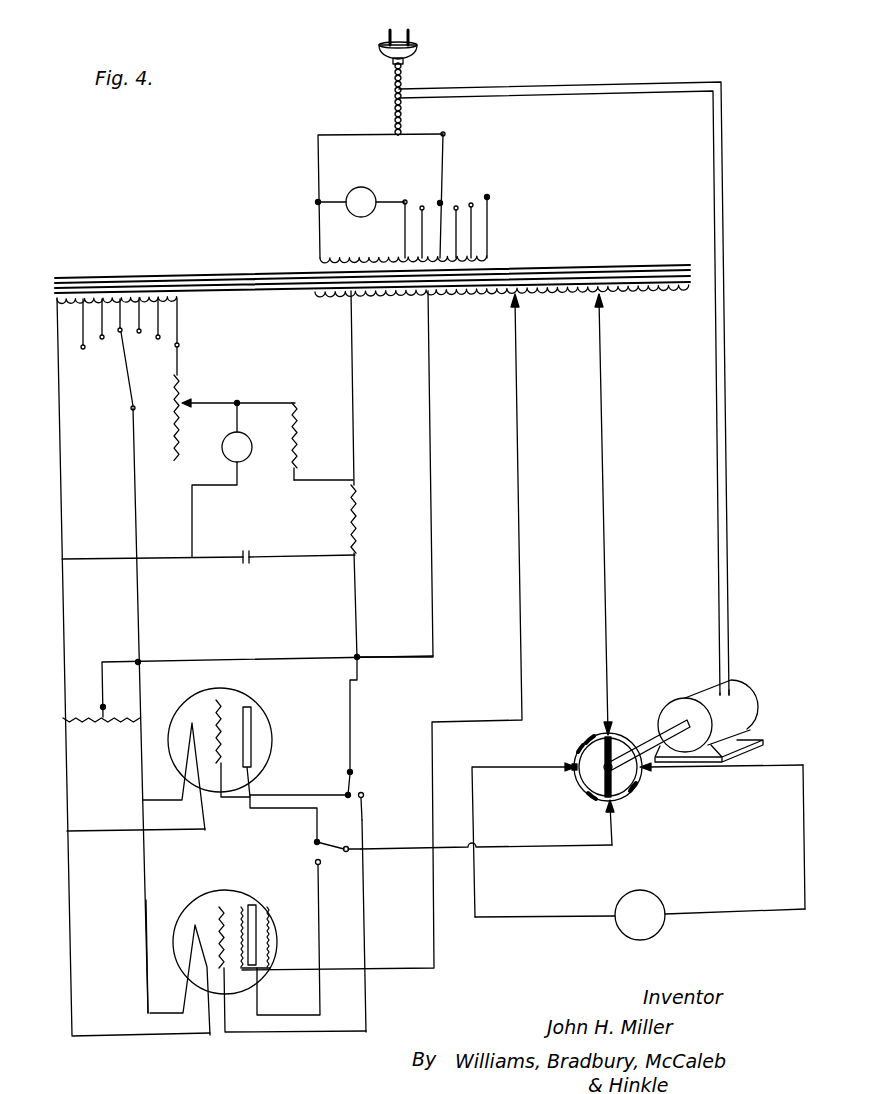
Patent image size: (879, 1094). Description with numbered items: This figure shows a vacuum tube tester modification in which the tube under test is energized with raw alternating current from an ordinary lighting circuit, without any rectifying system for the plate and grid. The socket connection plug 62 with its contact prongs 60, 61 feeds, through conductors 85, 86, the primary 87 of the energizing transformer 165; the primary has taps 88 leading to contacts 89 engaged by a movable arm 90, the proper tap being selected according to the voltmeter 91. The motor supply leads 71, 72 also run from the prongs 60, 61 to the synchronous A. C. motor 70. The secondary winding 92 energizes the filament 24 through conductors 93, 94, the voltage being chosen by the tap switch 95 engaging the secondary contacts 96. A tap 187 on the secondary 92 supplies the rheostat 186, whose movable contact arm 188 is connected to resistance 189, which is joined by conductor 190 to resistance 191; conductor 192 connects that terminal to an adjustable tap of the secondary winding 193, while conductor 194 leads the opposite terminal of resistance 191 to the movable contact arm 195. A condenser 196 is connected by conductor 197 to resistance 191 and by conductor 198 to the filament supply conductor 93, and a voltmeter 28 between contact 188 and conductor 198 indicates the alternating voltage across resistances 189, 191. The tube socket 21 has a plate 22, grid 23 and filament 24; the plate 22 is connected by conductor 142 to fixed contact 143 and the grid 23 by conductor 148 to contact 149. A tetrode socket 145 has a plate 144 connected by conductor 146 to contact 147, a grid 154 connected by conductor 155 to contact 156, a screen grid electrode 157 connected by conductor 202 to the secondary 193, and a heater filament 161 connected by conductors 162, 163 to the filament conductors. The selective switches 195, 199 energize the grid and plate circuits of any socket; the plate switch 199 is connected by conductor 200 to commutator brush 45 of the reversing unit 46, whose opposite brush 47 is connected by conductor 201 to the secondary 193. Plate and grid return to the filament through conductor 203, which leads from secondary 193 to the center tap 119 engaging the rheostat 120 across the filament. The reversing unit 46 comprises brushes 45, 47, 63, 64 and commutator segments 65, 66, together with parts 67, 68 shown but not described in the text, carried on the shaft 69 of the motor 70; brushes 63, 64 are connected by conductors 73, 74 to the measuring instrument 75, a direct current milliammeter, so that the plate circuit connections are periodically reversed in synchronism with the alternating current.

The contact prong 60 is at (388, 36).
The contact prong 61 is at (411, 36).
The socket connection plug 62 is at (405, 61).
The motor supply lead 71 is at (488, 95).
The motor supply lead 72 is at (485, 88).
The conductor 85 is at (340, 134).
The conductor 86 is at (440, 132).
The primary 87 is at (371, 256).
The taps 88 is at (488, 224).
The contacts 89 is at (490, 196).
The movable arm 90 is at (445, 168).
The voltmeter 91 is at (363, 186).
The secondary winding 92 is at (104, 297).
The conductor 93 is at (60, 560).
The conductor 94 is at (140, 627).
The tap switch 95 is at (127, 380).
The secondary contacts 96 is at (84, 350).
The energizing transformer 165 is at (252, 277).
The secondary winding 193 is at (464, 296).
The rheostat 186 is at (184, 392).
The tap 187 is at (181, 358).
The movable contact arm 188 is at (214, 403).
The resistance 189 is at (298, 438).
The conductor 190 is at (323, 480).
The resistance 191 is at (358, 512).
The conductor 192 is at (356, 396).
The conductor 194 is at (359, 620).
The voltmeter 28 is at (246, 459).
The condenser 196 is at (245, 548).
The conductor 197 is at (312, 560).
The conductor 198 is at (166, 560).
The center tap 119 is at (103, 664).
The center tap resistor 120 is at (103, 728).
The vacuum tube socket 21 is at (193, 706).
The plate 22 is at (253, 728).
The grid 23 is at (232, 698).
The filament 24 is at (185, 743).
The conductor 142 is at (270, 812).
The fixed contact 143 is at (322, 841).
The contact 147 is at (297, 851).
The conductor 148 is at (272, 795).
The contact 149 is at (347, 800).
The contact 156 is at (365, 796).
The conductor 155 is at (368, 897).
The movable contact arm 195 is at (349, 770).
The plate switch 199 is at (336, 851).
The tetrode socket 145 is at (197, 908).
The grid 154 is at (227, 905).
The plate 144 is at (258, 913).
The screen grid electrode 157 is at (268, 930).
The conductor 146 is at (322, 937).
The heater filament 161 is at (186, 938).
The conductor 162 is at (147, 975).
The conductor 163 is at (105, 1034).
The conductor 200 is at (586, 790).
The conductor 201 is at (606, 576).
The conductor 202 is at (518, 504).
The conductor 203 is at (430, 483).
The brush 45 is at (615, 816).
The reversing unit 46 is at (640, 712).
The brush 47 is at (611, 731).
The brush 63 is at (573, 765).
The brush 64 is at (650, 772).
The commutator segment 65 is at (594, 737).
The commutator segment 66 is at (593, 798).
The contact segment 67 is at (580, 746).
The contact segment 68 is at (634, 788).
The shaft 69 is at (655, 722).
The synchronous A. C. motor 70 is at (722, 688).
The conductor 73 is at (548, 918).
The conductor 74 is at (758, 770).
The measuring instrument 75 is at (657, 904).